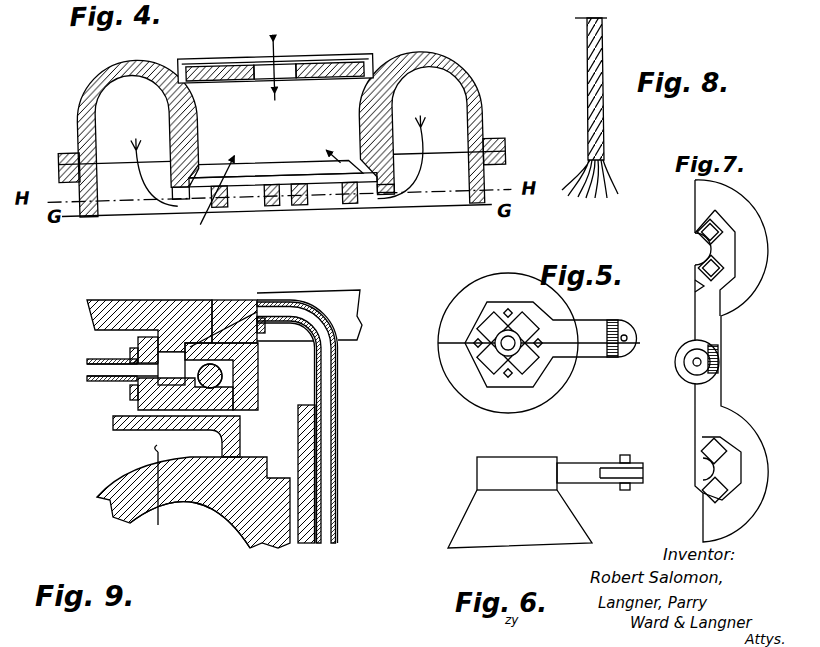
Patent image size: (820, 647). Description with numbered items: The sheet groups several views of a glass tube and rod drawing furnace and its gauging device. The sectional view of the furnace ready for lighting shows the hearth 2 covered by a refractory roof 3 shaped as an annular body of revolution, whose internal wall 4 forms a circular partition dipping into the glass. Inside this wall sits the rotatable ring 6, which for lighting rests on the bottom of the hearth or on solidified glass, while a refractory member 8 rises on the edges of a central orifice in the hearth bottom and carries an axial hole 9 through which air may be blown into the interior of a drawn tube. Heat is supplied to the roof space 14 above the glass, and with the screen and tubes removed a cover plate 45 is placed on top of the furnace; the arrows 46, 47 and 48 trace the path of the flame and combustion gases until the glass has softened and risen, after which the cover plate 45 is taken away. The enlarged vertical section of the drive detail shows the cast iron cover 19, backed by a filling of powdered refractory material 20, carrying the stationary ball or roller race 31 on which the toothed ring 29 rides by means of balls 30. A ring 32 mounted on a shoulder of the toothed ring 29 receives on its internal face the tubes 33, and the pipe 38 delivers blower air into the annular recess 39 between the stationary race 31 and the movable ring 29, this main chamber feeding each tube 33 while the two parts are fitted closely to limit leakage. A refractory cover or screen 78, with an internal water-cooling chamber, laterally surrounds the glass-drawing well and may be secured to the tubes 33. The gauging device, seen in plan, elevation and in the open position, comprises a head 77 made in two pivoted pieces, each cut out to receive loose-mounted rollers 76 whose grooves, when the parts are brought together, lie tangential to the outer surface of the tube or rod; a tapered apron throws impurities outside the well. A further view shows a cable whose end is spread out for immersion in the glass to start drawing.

In FIG. 4, the hearth 2 is at (490, 182).
In FIG. 9, the roof 3 is at (100, 494).
In FIG. 4, the internal wall 4 is at (178, 204).
In FIG. 4, the ring 6 is at (220, 212).
In FIG. 4, the refractory member 8 is at (270, 212).
In FIG. 4, the axial hole 9 is at (292, 212).
In FIG. 4, the roof space 14 is at (427, 93).
In FIG. 9, the roof space 14 is at (203, 522).
In FIG. 9, the cover 19 is at (113, 423).
In FIG. 9, the filling of powdered refractory material 20 is at (152, 499).
In FIG. 9, the toothed ring 29 is at (100, 316).
In FIG. 9, the balls 30 is at (222, 378).
In FIG. 9, the ball or roller race 31 is at (218, 397).
In FIG. 9, the ring 32 is at (230, 305).
In FIG. 9, the tubes 33 is at (324, 434).
In FIG. 9, the pipe 38 is at (100, 377).
In FIG. 9, the annular recess 39 is at (165, 365).
In FIG. 4, the cover plate 45 is at (337, 75).
In FIG. 4, the arrow 46 is at (278, 199).
In FIG. 4, the arrow 47 is at (427, 143).
In FIG. 4, the arrow 48 is at (279, 103).
In FIG. 7, the rollers 76 is at (708, 260).
In FIG. 5, the rollers 76 is at (532, 365).
In FIG. 7, the head 77 is at (747, 218).
In FIG. 5, the head 77 is at (500, 283).
In FIG. 6, the head 77 is at (478, 520).
In FIG. 9, the cover or screen 78 is at (308, 477).